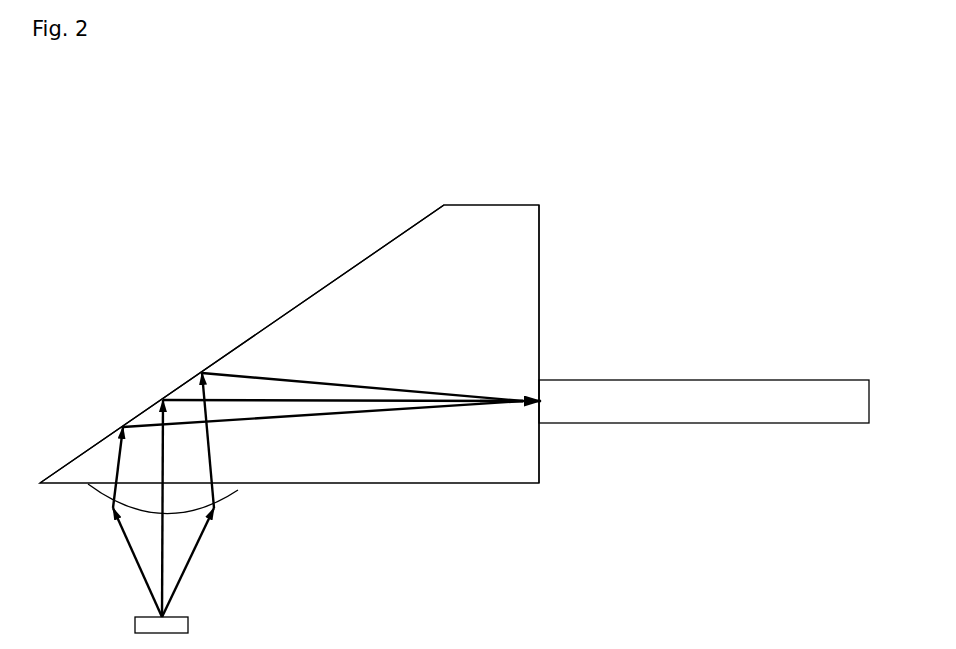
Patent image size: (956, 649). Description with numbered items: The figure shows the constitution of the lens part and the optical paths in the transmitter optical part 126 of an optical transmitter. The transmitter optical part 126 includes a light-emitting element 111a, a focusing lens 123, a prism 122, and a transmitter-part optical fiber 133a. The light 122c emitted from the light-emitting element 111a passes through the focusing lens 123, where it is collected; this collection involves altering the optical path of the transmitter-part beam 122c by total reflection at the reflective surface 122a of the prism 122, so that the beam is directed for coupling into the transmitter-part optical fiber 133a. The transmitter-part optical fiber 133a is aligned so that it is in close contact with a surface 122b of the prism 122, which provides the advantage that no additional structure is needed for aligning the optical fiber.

The transmitter optical part 126 is at (789, 127).
The prism 122 is at (496, 278).
The reflective surface 122a is at (325, 277).
The surface of the prism 122b is at (550, 237).
The transmitter-part beam 122c is at (418, 414).
The transmitter-part optical fiber 133a is at (689, 378).
The focusing lens 123 is at (242, 492).
The light-emitting element 111a is at (199, 614).